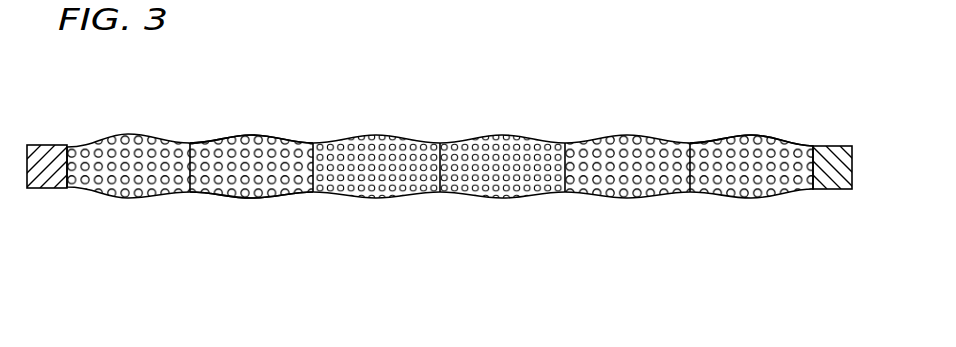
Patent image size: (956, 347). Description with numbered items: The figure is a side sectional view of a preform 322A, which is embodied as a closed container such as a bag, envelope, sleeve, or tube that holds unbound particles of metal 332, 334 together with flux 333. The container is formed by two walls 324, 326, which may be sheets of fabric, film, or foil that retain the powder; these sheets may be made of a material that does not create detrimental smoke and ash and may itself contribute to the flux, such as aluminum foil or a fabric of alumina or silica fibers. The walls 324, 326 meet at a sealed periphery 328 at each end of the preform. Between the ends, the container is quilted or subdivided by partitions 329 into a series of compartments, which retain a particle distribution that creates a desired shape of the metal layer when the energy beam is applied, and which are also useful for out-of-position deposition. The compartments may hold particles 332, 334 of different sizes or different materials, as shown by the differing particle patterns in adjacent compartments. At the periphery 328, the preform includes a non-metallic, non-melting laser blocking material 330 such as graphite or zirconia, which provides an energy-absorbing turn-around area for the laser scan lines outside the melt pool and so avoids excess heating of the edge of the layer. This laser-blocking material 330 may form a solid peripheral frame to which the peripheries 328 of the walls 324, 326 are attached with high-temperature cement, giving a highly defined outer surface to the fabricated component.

The preform 322A is at (562, 62).
The sealed periphery 328 is at (44, 137).
The laser blocking material 330 is at (45, 173).
The wall 324 is at (250, 135).
The wall 326 is at (250, 198).
The partition 329 is at (441, 164).
The metal particles 334 is at (377, 175).
The flux 333 is at (748, 135).
The metal particles 332 is at (723, 173).